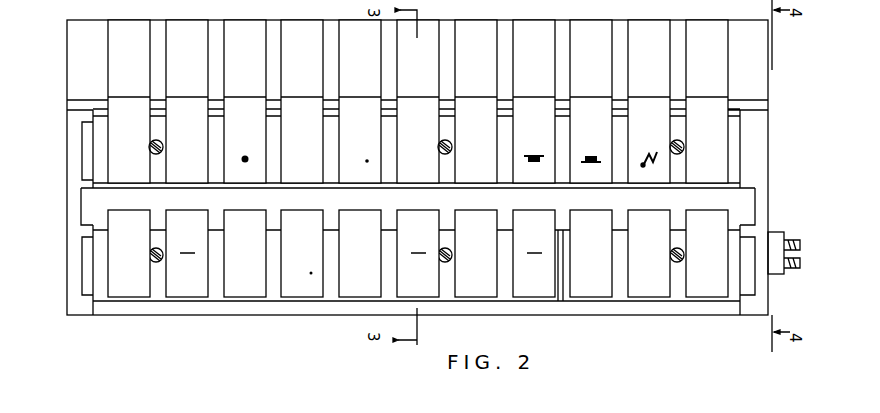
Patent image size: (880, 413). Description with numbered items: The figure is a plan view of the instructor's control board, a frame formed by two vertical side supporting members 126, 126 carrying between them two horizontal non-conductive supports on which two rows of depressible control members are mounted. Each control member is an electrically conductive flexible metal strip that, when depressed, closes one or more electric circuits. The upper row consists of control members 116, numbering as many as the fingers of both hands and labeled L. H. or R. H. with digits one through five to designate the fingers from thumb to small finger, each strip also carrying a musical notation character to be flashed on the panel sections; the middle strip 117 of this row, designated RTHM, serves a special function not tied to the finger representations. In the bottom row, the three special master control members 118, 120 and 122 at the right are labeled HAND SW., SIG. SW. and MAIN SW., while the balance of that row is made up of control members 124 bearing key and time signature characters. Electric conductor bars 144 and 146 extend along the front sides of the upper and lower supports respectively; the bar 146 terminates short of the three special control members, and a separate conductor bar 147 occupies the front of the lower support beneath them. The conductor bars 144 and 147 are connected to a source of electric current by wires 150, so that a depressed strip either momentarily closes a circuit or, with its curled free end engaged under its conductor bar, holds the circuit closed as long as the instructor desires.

The control members 116 is at (185, 100).
The middle strip 117 is at (415, 100).
The special master control member 118 is at (590, 288).
The special master control member 120 is at (650, 288).
The special master control member 122 is at (705, 288).
The control members 124 is at (240, 288).
The side supporting members 126 is at (76, 194).
The electric conductor bar 144 is at (100, 134).
The electric conductor bar 146 is at (100, 262).
The separate conductor bar 147 is at (738, 295).
The wires 150 is at (800, 252).